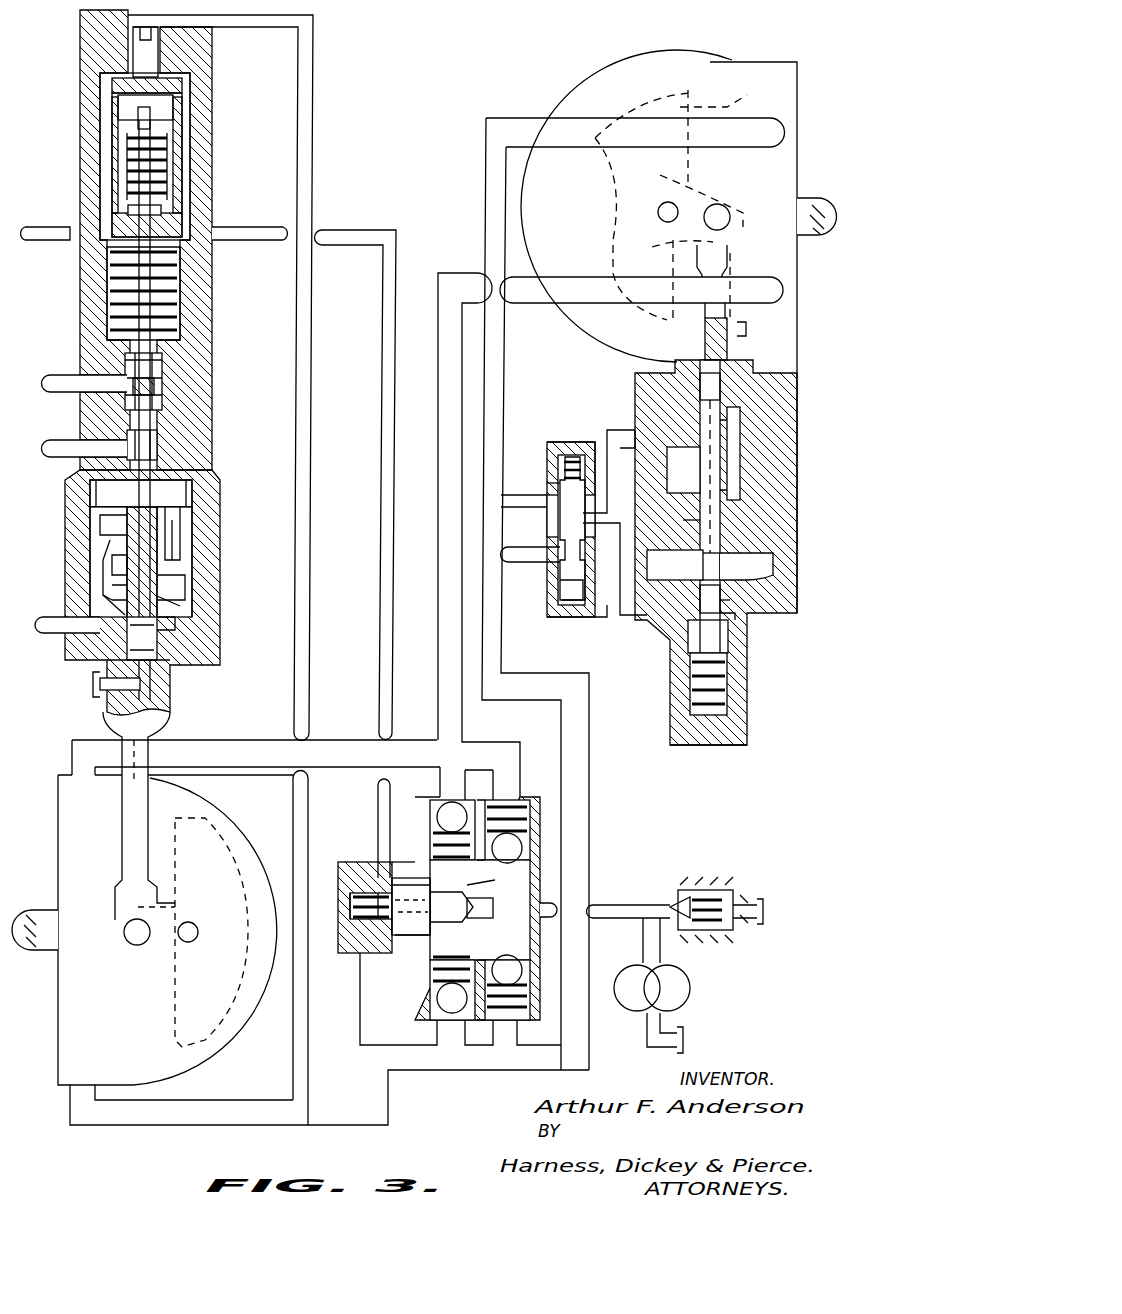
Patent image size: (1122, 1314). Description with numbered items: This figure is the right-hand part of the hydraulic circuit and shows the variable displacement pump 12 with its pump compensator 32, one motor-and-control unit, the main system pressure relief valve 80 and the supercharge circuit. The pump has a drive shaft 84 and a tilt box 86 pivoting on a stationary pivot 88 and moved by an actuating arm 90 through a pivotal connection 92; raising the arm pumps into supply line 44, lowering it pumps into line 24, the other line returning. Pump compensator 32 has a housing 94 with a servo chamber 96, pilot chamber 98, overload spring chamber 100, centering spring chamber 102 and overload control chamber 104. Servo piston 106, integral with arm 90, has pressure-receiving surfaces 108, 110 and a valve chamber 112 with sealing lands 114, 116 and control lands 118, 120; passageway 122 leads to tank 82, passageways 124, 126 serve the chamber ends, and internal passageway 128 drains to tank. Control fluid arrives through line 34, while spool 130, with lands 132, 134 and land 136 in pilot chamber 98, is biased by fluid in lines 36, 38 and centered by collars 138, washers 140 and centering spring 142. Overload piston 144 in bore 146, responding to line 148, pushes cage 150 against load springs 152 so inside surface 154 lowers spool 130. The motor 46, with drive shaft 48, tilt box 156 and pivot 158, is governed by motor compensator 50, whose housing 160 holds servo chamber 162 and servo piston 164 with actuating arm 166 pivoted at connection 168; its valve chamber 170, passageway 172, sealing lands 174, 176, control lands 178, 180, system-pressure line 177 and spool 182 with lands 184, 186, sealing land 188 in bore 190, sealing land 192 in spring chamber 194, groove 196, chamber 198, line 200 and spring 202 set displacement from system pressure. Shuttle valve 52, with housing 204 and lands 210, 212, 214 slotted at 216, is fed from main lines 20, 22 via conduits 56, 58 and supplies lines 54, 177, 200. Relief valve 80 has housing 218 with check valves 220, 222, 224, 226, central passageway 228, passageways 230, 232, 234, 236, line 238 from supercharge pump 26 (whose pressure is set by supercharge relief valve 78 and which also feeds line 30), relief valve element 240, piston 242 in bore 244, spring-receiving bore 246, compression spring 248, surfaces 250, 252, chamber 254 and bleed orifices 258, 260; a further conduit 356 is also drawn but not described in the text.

The variable displacement pump 12 is at (50, 807).
The main fluid line 20 is at (440, 285).
The main fluid line 22 is at (540, 118).
The fluid line 24 is at (226, 1116).
The supercharge pump 26 is at (685, 990).
The fluid line 30 is at (660, 950).
The pump compensator 32 is at (72, 48).
The fluid conduit 34 is at (62, 633).
The fluid conduit 36 is at (63, 458).
The fluid conduit 38 is at (63, 395).
The supply line 44 is at (232, 742).
The variable displacement fluid motor 46 is at (668, 68).
The drive shaft 48 is at (806, 197).
The motor compensator 50 is at (655, 697).
The system pressure shuttle valve 52 is at (552, 431).
The fluid line 54 is at (560, 512).
The fluid conduit 56 is at (482, 565).
The fluid line 58 is at (547, 484).
The supercharge relief valve 78 is at (724, 880).
The main system pressure relief valve 80 is at (402, 978).
The tank 82 is at (93, 685).
The drive shaft 84 is at (46, 948).
The tilt box 86 is at (232, 820).
The stationary pivot 88 is at (185, 940).
The actuating arm 90 is at (122, 810).
The pivotal connection 92 is at (130, 938).
The housing 94 is at (195, 355).
The servo chamber 96 is at (190, 490).
The pilot chamber 98 is at (160, 395).
The overload spring chamber 100 is at (180, 265).
The centering spring chamber 102 is at (190, 150).
The overload control chamber 104 is at (186, 97).
The servo piston 106 is at (185, 585).
The pressure-receiving surface 108 is at (98, 492).
The second pressure-receiving surface 110 is at (148, 622).
The valve chamber 112 is at (175, 632).
The sealing land 114 is at (115, 512).
The sealing land 116 is at (118, 596).
The control land 118 is at (108, 543).
The control land 120 is at (112, 562).
The passageway 122 is at (150, 685).
The passageway 124 is at (175, 548).
The passageway 126 is at (165, 597).
The internal passageway 128 is at (108, 580).
The spool 130 is at (150, 470).
The land 132 is at (165, 528).
The land 134 is at (160, 570).
The land 136 is at (154, 418).
The fixed collars 138 is at (152, 113).
The sliding washers 140 is at (114, 128).
The centering spring 142 is at (127, 150).
The overload piston 144 is at (152, 67).
The bore 146 is at (150, 50).
The fluid line 148 is at (313, 68).
The cage 150 is at (118, 97).
The load springs 152 is at (110, 262).
The inside surface 154 is at (170, 88).
The tilt box 156 is at (735, 107).
The pivot 158 is at (660, 210).
The housing 160 is at (640, 374).
The servo chamber 162 is at (772, 550).
The servo piston 164 is at (762, 490).
The actuating arm 166 is at (727, 257).
The pivotal connection 168 is at (724, 208).
The valve chamber 170 is at (722, 510).
The passageway 172 is at (737, 343).
The sealing land 174 is at (735, 402).
The sealing land 176 is at (778, 415).
The fluid line 177 is at (607, 440).
The control land 178 is at (697, 423).
The control land 180 is at (740, 458).
The spool 182 is at (733, 600).
The land 184 is at (668, 418).
The land 186 is at (683, 518).
The sealing land 188 is at (700, 600).
The bore 190 is at (740, 618).
The sealing land 192 is at (747, 657).
The spring chamber 194 is at (688, 642).
The groove 196 is at (735, 640).
The chamber 198 is at (730, 650).
The fluid line 200 is at (615, 628).
The spring 202 is at (730, 700).
The housing 204 is at (560, 618).
The land 210 is at (560, 592).
The land 212 is at (558, 470).
The central land 214 is at (555, 552).
The slot 216 is at (557, 655).
The housing 218 is at (377, 885).
The check valve 220 is at (450, 805).
The check valve 222 is at (512, 858).
The check valve 224 is at (512, 972).
The check valve 226 is at (445, 1000).
The passageway 228 is at (485, 907).
The passageway 230 is at (452, 860).
The passageway 232 is at (507, 864).
The passageway 234 is at (507, 955).
The passageway 236 is at (455, 957).
The fluid line 238 is at (606, 903).
The relief valve element 240 is at (430, 907).
The piston 242 is at (400, 800).
The bore 244 is at (377, 830).
The spring-receiving bore 246 is at (365, 922).
The compression spring 248 is at (353, 920).
The lower surface 250 is at (482, 885).
The upper face 252 is at (375, 925).
The chamber 254 is at (378, 862).
The bleed orifice 258 is at (413, 944).
The bleed orifice 260 is at (412, 915).
The conduit 356 is at (382, 505).